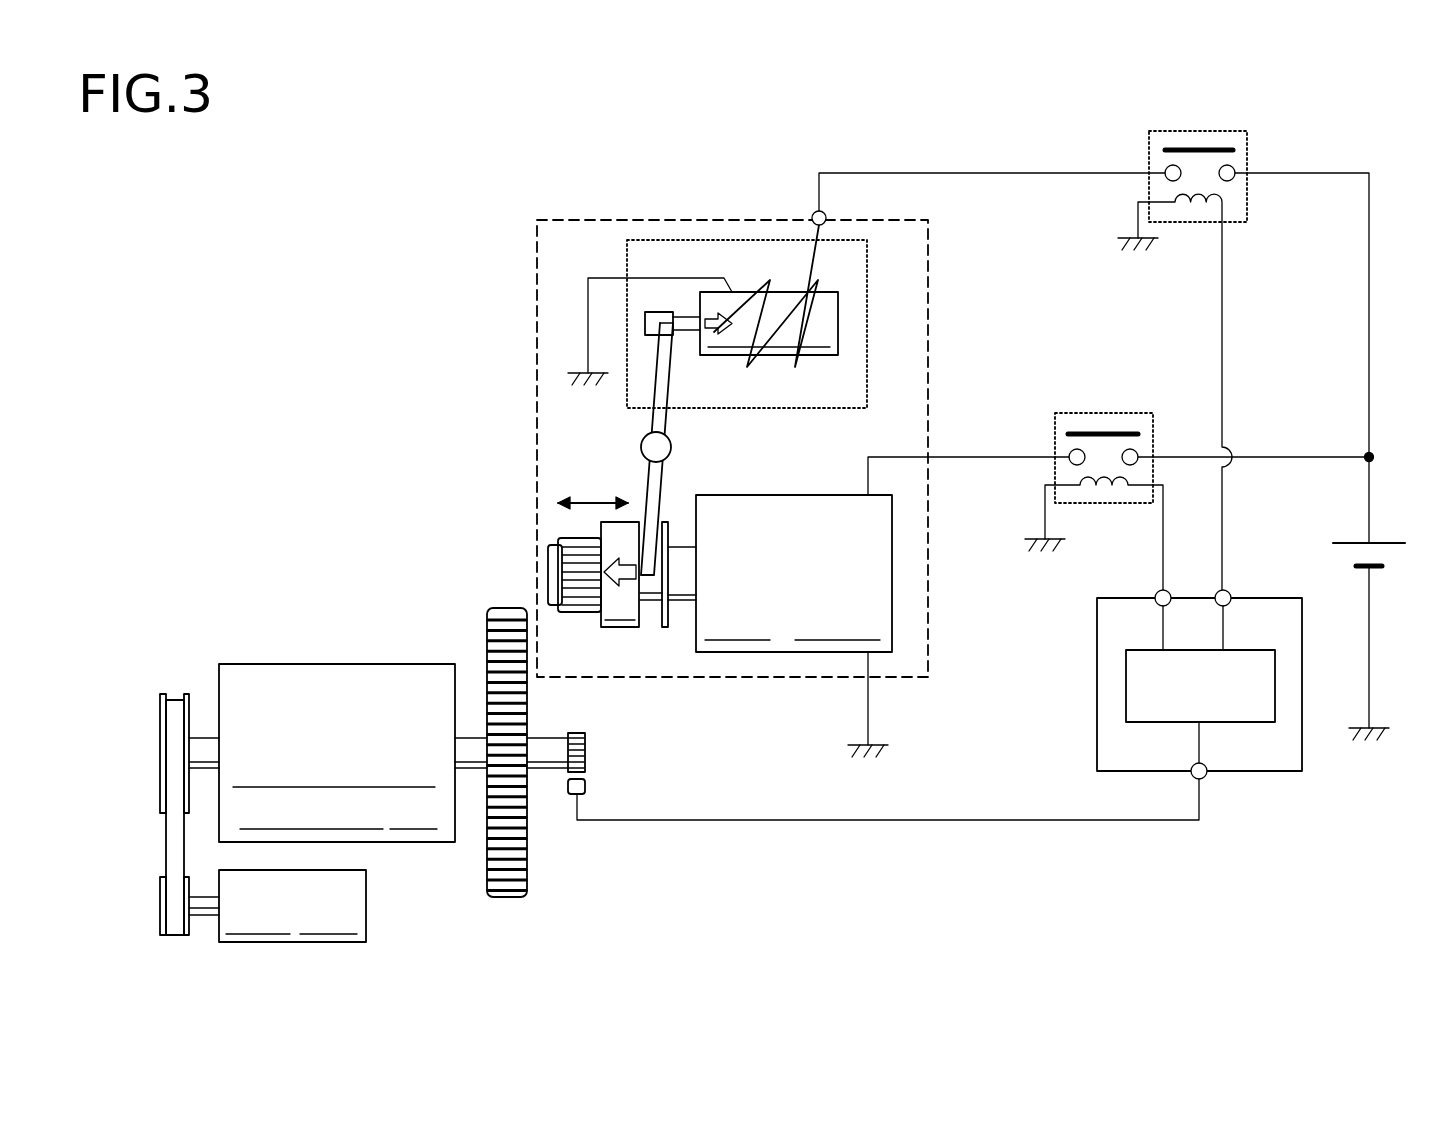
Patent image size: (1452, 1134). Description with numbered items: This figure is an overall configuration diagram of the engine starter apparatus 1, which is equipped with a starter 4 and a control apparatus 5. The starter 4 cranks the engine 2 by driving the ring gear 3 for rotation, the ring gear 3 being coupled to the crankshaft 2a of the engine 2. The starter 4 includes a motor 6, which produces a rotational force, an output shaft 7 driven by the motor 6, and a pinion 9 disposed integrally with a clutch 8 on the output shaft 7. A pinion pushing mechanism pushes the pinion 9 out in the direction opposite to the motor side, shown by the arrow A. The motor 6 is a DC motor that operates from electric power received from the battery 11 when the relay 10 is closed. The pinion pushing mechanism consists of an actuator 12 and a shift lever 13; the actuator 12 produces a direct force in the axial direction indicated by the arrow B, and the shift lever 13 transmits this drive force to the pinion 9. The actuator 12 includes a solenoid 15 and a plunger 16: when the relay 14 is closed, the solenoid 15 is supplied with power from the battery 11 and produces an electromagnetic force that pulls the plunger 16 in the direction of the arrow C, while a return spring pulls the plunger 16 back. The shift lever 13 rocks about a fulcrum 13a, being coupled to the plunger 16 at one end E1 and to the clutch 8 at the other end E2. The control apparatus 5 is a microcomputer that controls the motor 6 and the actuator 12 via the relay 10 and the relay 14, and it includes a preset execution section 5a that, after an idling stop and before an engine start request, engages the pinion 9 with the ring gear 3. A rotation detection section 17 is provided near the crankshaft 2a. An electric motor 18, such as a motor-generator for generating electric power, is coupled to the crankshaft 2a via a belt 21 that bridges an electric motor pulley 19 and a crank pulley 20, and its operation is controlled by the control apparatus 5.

The engine starter apparatus 1 is at (311, 228).
The engine 2 is at (303, 664).
The crankshaft 2a is at (471, 760).
The ring gear 3 is at (507, 862).
The starter 4 is at (585, 218).
The control apparatus 5 is at (939, 673).
The preset execution section 5a is at (1126, 680).
The motor 6 is at (778, 642).
The output shaft 7 is at (677, 594).
The clutch 8 is at (617, 620).
The pinion 9 is at (560, 540).
The relay 10 is at (1098, 413).
The battery 11 is at (1383, 552).
The actuator 12 is at (690, 237).
The shift lever 13 is at (657, 393).
The fulcrum 13a is at (650, 446).
The relay 14 is at (1193, 131).
The solenoid 15 is at (790, 290).
The plunger 16 is at (745, 300).
The rotation detection section 17 is at (575, 796).
The electric motor 18 is at (300, 928).
The electric motor pulley 19 is at (163, 918).
The crank pulley 20 is at (162, 728).
The belt 21 is at (175, 845).
The arrow A is at (625, 583).
The arrow B is at (590, 501).
The arrow C is at (711, 332).
The one end E1 is at (661, 330).
The other end E2 is at (647, 577).